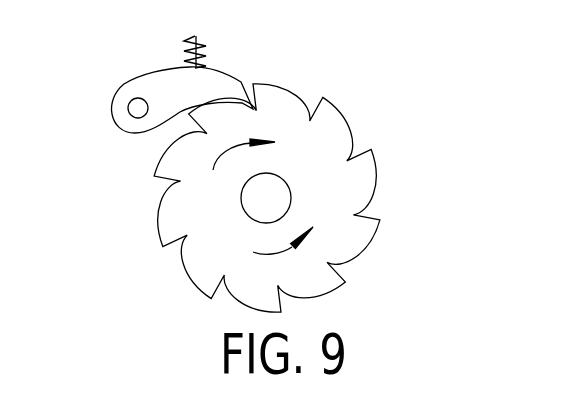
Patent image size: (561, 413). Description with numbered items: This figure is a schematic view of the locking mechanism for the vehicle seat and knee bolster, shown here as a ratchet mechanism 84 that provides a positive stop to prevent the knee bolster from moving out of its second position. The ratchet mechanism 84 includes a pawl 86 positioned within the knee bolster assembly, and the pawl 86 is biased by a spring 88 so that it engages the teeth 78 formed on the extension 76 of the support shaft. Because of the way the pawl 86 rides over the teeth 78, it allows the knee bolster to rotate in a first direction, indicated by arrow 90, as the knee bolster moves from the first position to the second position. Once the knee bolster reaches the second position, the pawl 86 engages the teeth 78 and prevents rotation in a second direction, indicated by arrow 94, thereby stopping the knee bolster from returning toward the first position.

The extension 76 is at (136, 227).
The teeth 78 is at (318, 112).
The ratchet mechanism 84 is at (402, 196).
The pawl 86 is at (123, 98).
The spring 88 is at (183, 56).
The arrow 90 is at (251, 164).
The arrow 94 is at (288, 254).